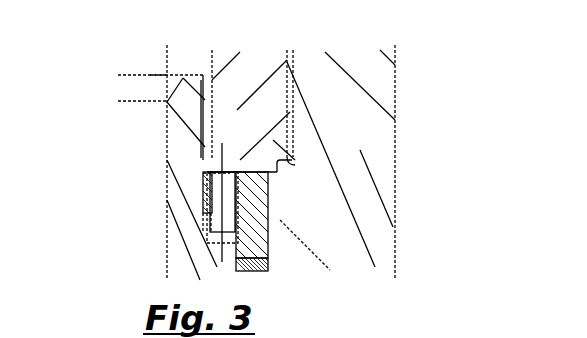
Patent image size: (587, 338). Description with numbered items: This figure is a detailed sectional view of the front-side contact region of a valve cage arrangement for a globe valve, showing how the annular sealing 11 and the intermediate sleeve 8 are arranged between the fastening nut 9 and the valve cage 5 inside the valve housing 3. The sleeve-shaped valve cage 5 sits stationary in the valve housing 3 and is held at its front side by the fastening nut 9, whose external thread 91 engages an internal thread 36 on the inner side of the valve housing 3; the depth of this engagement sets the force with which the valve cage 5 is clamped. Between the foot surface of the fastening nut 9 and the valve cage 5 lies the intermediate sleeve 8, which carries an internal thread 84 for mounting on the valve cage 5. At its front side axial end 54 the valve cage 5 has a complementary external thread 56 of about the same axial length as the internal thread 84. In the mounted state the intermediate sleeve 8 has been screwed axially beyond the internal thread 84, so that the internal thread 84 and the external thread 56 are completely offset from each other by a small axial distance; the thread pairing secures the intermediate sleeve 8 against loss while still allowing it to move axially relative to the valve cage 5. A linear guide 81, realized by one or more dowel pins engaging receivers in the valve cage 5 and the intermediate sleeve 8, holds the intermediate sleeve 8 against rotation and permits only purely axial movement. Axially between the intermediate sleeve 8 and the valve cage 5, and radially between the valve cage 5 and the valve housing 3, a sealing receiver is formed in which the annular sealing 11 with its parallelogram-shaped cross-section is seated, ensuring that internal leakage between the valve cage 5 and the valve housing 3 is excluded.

The valve housing 3 is at (360, 163).
The valve cage 5 is at (178, 252).
The intermediate sleeve 8 is at (255, 232).
The fastening nut 9 is at (241, 91).
The annular sealing 11 is at (258, 265).
The internal thread 36 is at (288, 122).
The front side axial end 54 is at (187, 80).
The external thread 56 is at (203, 118).
The linear guide 81 is at (205, 225).
The internal thread 84 is at (201, 190).
The external thread 91 is at (288, 65).